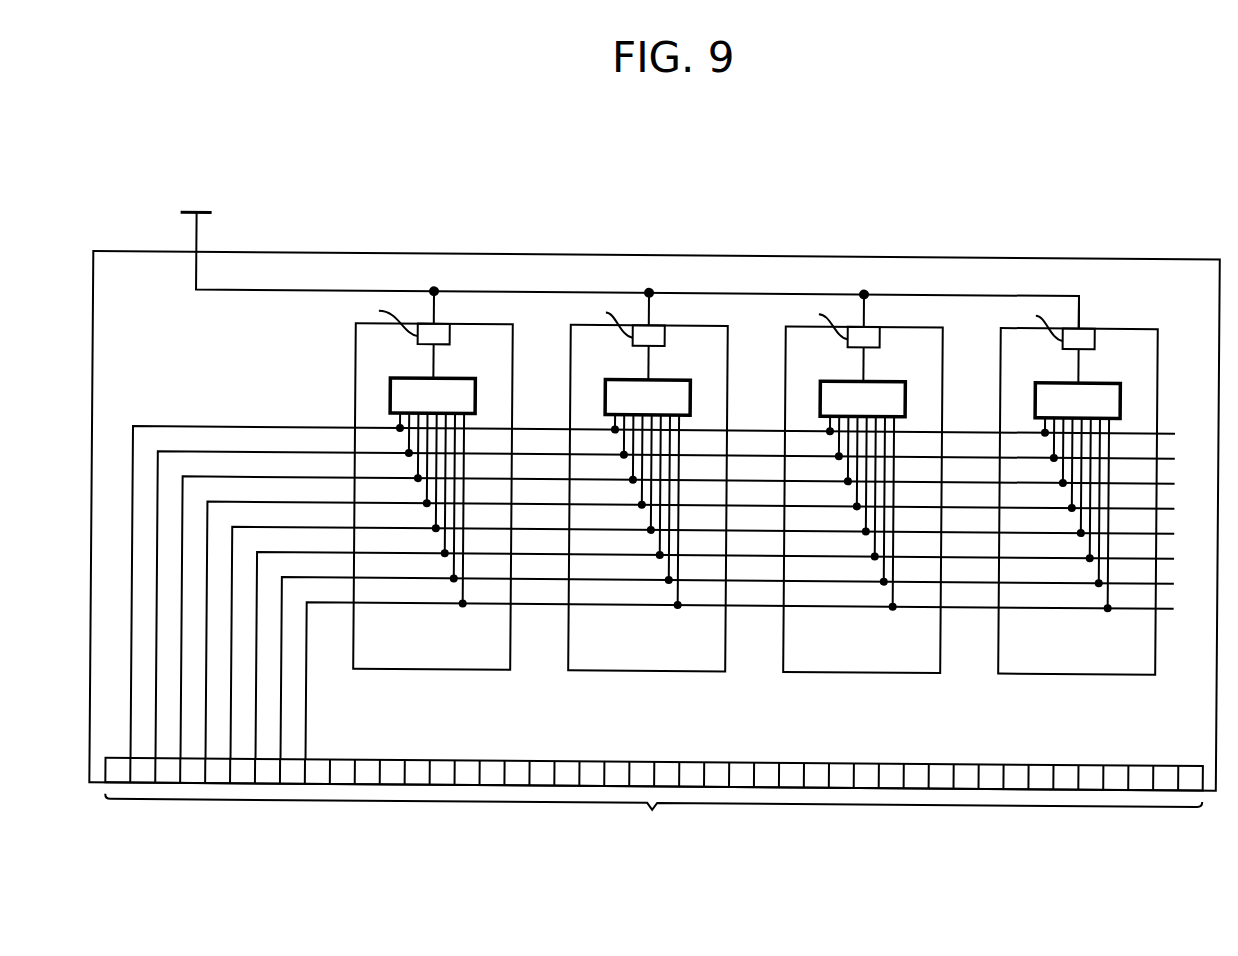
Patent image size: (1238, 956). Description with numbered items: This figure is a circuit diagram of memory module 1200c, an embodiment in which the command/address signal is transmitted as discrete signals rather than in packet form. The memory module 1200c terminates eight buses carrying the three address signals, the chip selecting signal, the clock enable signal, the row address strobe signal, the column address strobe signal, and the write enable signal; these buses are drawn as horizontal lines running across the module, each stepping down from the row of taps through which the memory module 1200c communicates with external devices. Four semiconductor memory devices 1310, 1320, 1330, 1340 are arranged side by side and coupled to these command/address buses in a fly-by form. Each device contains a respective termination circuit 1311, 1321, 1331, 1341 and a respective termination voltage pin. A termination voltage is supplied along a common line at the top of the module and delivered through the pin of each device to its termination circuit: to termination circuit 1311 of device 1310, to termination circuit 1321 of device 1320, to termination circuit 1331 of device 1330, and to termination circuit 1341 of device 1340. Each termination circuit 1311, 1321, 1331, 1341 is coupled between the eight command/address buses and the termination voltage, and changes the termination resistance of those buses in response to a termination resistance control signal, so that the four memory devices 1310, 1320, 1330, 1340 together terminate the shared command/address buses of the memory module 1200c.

The memory module 1200c is at (672, 178).
The semiconductor memory device 1310 is at (452, 325).
The termination circuit 1311 is at (446, 378).
The semiconductor memory device 1320 is at (688, 335).
The termination circuit 1321 is at (666, 483).
The semiconductor memory device 1330 is at (903, 336).
The termination circuit 1331 is at (881, 484).
The semiconductor memory device 1340 is at (1118, 340).
The termination circuit 1341 is at (1096, 486).